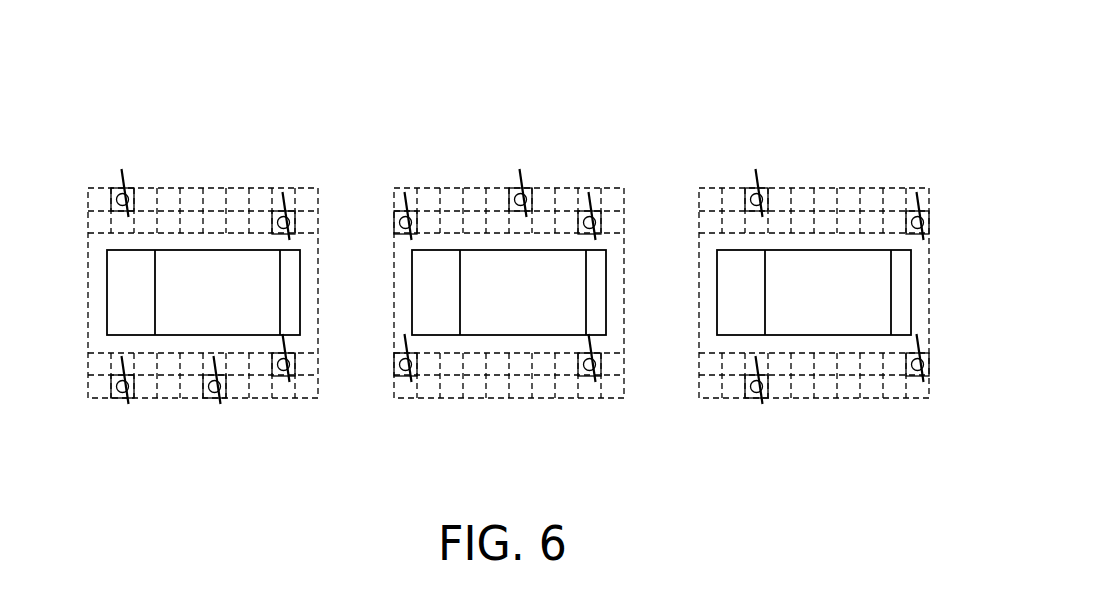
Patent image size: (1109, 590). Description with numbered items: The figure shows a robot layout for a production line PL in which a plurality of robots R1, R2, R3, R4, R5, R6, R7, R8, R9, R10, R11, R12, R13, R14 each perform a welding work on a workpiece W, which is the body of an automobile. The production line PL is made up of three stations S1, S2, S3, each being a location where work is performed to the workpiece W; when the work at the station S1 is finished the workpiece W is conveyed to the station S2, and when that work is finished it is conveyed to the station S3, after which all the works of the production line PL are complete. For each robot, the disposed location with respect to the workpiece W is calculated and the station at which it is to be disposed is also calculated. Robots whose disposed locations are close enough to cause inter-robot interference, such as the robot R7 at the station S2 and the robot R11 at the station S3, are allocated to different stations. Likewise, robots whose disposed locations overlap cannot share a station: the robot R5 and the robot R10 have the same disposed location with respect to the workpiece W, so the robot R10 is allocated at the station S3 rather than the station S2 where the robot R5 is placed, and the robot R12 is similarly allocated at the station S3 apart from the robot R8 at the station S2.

The production line PL is at (254, 108).
The station S1 is at (929, 287).
The station S2 is at (624, 287).
The station S3 is at (318, 287).
The workpiece W is at (226, 305).
The robot R1 is at (930, 214).
The robot R2 is at (765, 191).
The robot R3 is at (929, 373).
The robot R4 is at (769, 398).
The robot R5 is at (603, 218).
The robot R6 is at (533, 190).
The robot R7 is at (397, 213).
The robot R8 is at (602, 376).
The robot R9 is at (398, 383).
The robot R10 is at (293, 212).
The robot R11 is at (113, 193).
The robot R12 is at (294, 373).
The robot R13 is at (226, 398).
The robot R14 is at (115, 398).